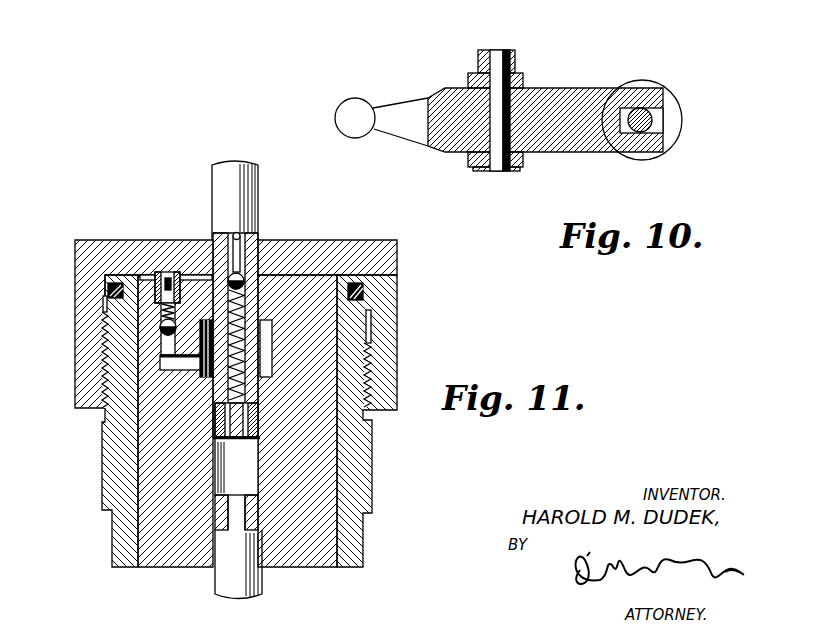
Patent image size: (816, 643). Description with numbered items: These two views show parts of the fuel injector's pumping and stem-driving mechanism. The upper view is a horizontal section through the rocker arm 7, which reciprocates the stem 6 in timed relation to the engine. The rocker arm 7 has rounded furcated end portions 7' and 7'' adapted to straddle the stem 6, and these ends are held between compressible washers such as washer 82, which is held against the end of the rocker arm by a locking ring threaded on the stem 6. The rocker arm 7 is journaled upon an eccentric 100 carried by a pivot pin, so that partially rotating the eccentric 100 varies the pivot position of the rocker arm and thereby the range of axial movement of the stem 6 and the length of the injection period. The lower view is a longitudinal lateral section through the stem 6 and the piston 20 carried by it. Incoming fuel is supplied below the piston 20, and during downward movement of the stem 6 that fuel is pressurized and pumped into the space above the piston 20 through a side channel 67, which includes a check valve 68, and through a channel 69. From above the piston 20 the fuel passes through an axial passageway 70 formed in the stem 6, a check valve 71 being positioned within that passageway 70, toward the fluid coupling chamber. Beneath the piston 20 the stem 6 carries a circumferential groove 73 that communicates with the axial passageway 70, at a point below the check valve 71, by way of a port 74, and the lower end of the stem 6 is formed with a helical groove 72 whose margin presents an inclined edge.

In FIG. 11, the stem 6 is at (217, 170).
In FIG. 10, the rocker arm 7 is at (499, 101).
In FIG. 10, the furcated end portion 7' is at (668, 83).
In FIG. 10, the furcated end portion 7'' is at (645, 154).
In FIG. 10, the compressible washer 82 is at (672, 110).
In FIG. 10, the eccentric 100 is at (487, 137).
In FIG. 11, the piston 20 is at (270, 290).
In FIG. 11, the channel 69 is at (187, 274).
In FIG. 11, the check valve 68 is at (165, 334).
In FIG. 11, the side channel 67 is at (168, 371).
In FIG. 11, the axial passageway 70 is at (260, 238).
In FIG. 11, the check valve 71 is at (244, 290).
In FIG. 11, the circumferential groove 73 is at (257, 396).
In FIG. 11, the helical groove 72 is at (257, 443).
In FIG. 11, the port 74 is at (167, 423).